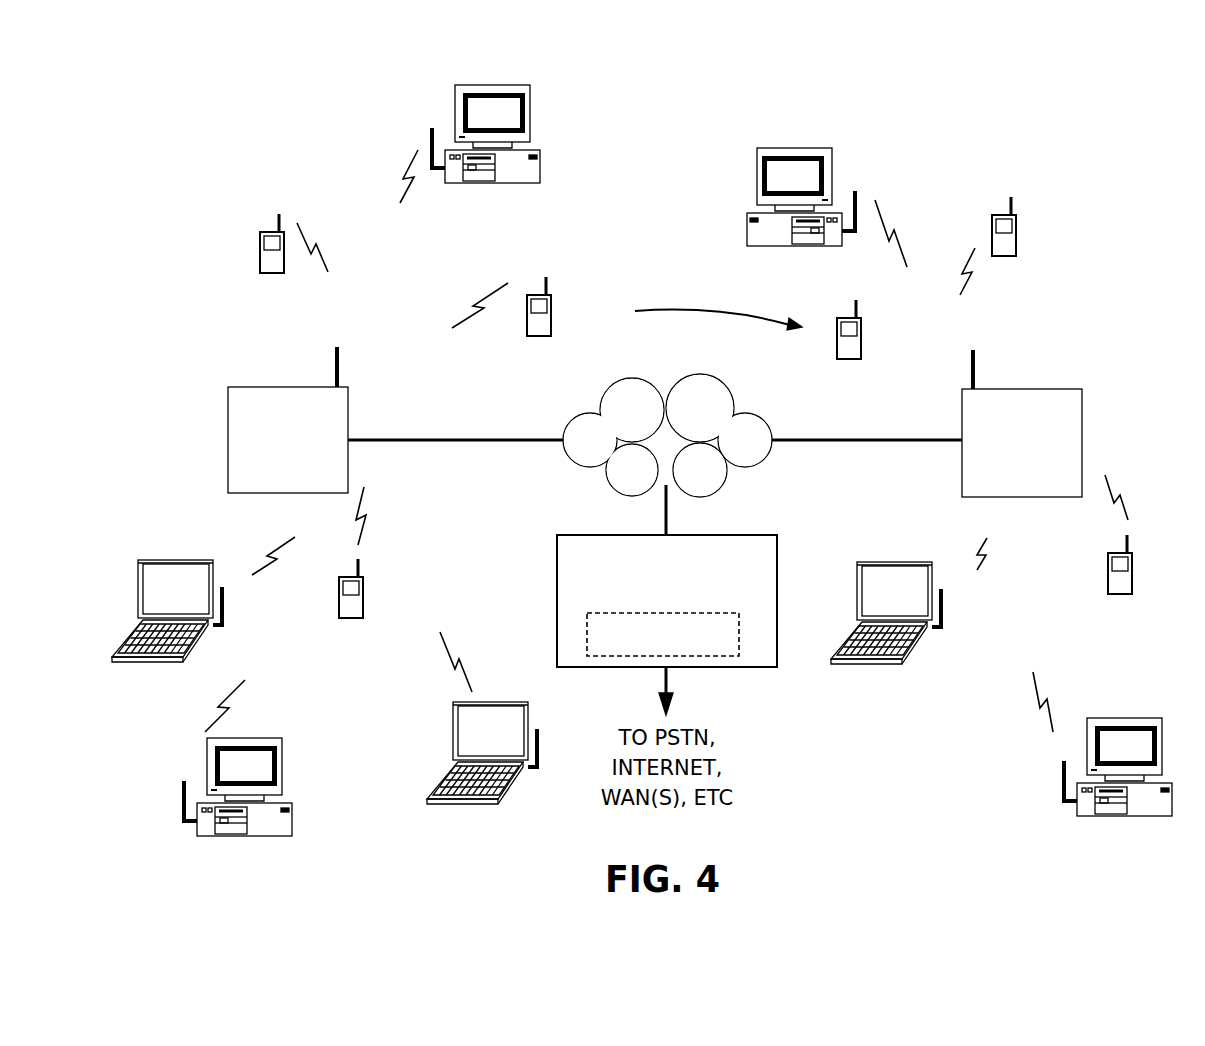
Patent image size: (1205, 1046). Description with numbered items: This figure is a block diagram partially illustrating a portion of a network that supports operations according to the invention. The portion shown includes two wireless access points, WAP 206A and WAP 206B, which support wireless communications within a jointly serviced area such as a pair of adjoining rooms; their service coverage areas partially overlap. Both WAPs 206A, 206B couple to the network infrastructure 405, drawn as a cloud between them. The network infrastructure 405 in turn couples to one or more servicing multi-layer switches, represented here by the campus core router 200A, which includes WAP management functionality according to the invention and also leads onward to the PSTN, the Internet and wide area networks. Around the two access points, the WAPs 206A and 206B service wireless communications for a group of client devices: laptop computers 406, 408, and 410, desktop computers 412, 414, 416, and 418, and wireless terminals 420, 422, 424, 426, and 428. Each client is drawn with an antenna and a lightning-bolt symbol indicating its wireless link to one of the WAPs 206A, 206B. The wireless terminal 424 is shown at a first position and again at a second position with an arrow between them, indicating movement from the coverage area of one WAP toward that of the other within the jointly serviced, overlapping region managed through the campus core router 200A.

The network infrastructure 405 is at (732, 397).
The WAP 206A is at (302, 385).
The WAP 206B is at (1057, 389).
The campus core router 200A is at (597, 534).
The desktop computer 416 is at (503, 85).
The desktop computer 418 is at (812, 148).
The desktop computer 412 is at (252, 736).
The desktop computer 414 is at (1113, 718).
The laptop computer 406 is at (185, 560).
The laptop computer 408 is at (498, 702).
The laptop computer 410 is at (903, 561).
The wireless terminal 422 is at (260, 262).
The wireless terminal 424 is at (550, 325).
The wireless terminal 426 is at (1015, 245).
The wireless terminal 420 is at (365, 608).
The wireless terminal 428 is at (1132, 588).